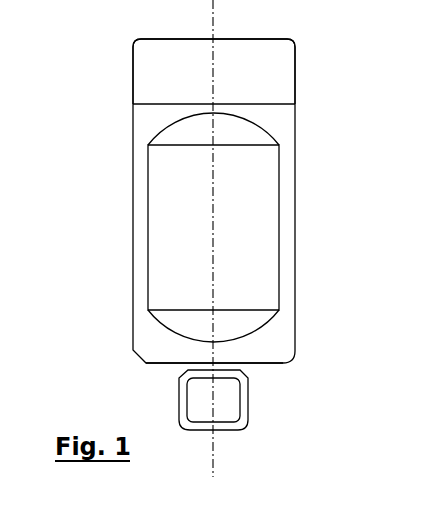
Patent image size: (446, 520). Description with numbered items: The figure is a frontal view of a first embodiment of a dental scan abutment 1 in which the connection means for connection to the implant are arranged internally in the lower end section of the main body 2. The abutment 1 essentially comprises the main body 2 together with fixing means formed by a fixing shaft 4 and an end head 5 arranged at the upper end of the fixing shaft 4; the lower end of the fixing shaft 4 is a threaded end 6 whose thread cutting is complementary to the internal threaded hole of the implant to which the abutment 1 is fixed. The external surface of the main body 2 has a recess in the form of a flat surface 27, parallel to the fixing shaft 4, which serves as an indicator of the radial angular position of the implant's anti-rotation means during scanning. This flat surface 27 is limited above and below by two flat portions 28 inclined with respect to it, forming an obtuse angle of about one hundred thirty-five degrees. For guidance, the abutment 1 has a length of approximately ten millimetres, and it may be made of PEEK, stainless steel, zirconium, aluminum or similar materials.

The dental scan abutment 1 is at (352, 62).
The main body 2 is at (282, 323).
The fixing shaft 4 is at (225, 368).
The end head 5 is at (165, 72).
The threaded end 6 is at (222, 407).
The flat surface 27 is at (180, 230).
The flat portions 28 is at (185, 133).